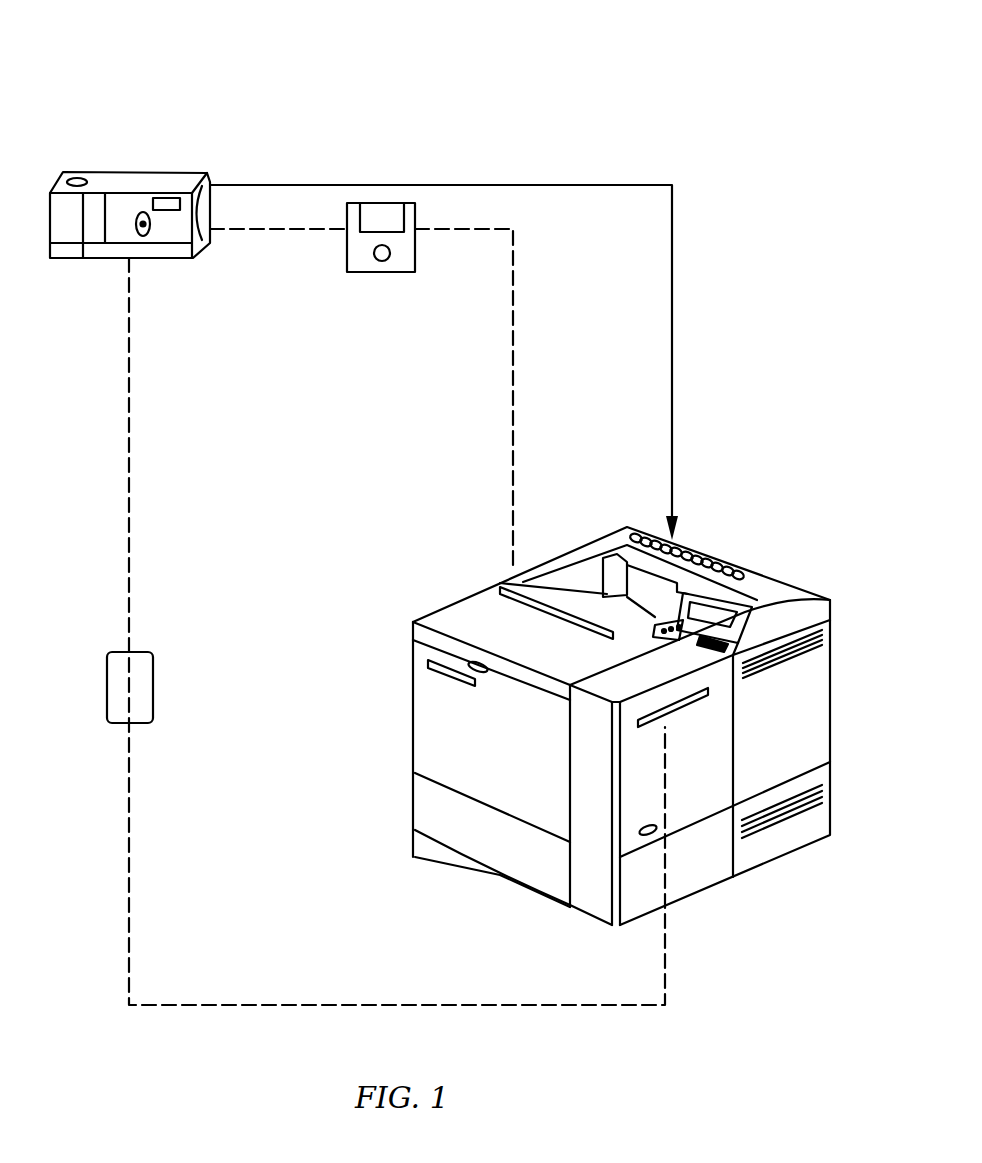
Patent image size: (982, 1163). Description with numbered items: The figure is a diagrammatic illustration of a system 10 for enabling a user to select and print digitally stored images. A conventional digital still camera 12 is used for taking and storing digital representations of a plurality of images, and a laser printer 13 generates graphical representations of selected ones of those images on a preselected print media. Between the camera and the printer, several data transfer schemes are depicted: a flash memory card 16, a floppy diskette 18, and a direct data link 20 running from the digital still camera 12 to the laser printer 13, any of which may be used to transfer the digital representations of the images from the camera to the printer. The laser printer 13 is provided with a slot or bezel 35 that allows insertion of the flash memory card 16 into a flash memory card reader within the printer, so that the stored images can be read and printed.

The system 10 is at (580, 106).
The digital still camera 12 is at (128, 172).
The laser printer 13 is at (398, 731).
The flash memory card 16 is at (153, 682).
The floppy diskette 18 is at (381, 272).
The direct data link 20 is at (672, 241).
The slot or bezel 35 is at (672, 714).